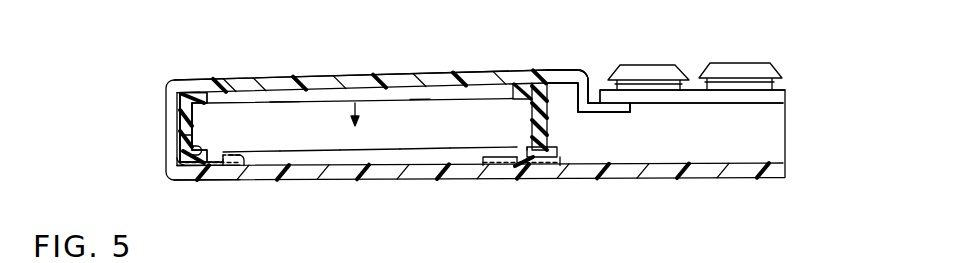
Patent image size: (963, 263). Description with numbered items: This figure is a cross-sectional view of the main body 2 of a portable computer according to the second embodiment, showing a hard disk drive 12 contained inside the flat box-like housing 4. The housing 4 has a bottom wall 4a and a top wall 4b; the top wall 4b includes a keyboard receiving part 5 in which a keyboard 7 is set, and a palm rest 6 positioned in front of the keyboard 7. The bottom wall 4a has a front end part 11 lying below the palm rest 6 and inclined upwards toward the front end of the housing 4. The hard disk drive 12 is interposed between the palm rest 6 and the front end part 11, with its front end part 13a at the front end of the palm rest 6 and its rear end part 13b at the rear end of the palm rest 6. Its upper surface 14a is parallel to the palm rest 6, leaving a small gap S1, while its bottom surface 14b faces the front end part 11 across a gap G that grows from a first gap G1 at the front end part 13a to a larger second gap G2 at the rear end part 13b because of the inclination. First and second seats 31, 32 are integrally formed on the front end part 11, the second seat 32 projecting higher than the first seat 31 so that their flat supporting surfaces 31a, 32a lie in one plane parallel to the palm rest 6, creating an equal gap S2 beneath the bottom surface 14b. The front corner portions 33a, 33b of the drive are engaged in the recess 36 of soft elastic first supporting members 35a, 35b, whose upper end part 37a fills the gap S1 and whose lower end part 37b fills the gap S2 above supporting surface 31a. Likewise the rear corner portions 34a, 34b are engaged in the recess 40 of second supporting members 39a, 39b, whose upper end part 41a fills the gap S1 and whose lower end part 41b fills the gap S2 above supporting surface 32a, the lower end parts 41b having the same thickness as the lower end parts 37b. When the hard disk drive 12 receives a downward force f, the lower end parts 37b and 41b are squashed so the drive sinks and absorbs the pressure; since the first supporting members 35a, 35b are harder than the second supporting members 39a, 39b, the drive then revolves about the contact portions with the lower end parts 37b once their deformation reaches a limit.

The main body 2 is at (686, 44).
The housing 4 is at (741, 155).
The bottom wall 4a is at (661, 175).
The top wall 4b is at (451, 80).
The keyboard receiving part 5 is at (606, 82).
The palm rest 6 is at (331, 82).
The keyboard 7 is at (755, 63).
The front end part 11 is at (350, 176).
The hard disk drive 12 is at (390, 92).
The front end part 13a is at (200, 123).
The rear end part 13b is at (513, 92).
The upper surface 14a is at (283, 105).
The bottom surface 14b is at (310, 160).
The first seat 31 is at (216, 172).
The supporting surface 31a is at (228, 158).
The second seat 32 is at (503, 160).
The supporting surface 32a is at (530, 128).
The corner portion 33a is at (188, 117).
The corner portion 33b is at (193, 127).
The corner portion 34a is at (548, 122).
The corner portion 34b is at (604, 98).
The first supporting member 35a is at (180, 108).
The first supporting member 35b is at (186, 127).
The recess 36 is at (180, 163).
The upper end part 37a is at (200, 88).
The lower end part 37b is at (195, 173).
The second supporting member 39a is at (562, 103).
The second supporting member 39b is at (588, 91).
The recess 40 is at (551, 147).
The upper end part 41a is at (531, 87).
The lower end part 41b is at (533, 158).
The gap G is at (392, 160).
The first gap G1 is at (266, 160).
The second gap G2 is at (448, 160).
The gap S1 is at (420, 93).
The gap S2 is at (241, 166).
The downward force f is at (360, 115).